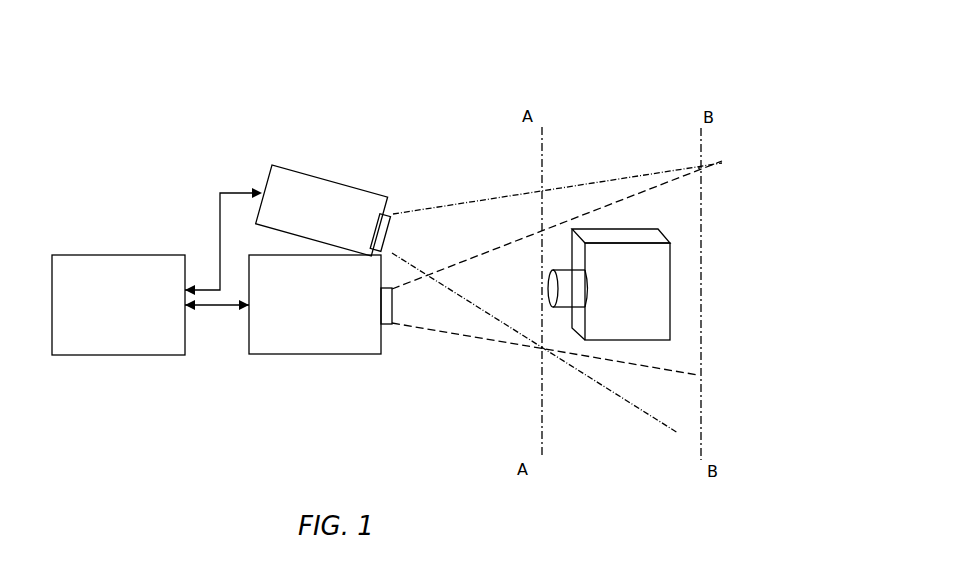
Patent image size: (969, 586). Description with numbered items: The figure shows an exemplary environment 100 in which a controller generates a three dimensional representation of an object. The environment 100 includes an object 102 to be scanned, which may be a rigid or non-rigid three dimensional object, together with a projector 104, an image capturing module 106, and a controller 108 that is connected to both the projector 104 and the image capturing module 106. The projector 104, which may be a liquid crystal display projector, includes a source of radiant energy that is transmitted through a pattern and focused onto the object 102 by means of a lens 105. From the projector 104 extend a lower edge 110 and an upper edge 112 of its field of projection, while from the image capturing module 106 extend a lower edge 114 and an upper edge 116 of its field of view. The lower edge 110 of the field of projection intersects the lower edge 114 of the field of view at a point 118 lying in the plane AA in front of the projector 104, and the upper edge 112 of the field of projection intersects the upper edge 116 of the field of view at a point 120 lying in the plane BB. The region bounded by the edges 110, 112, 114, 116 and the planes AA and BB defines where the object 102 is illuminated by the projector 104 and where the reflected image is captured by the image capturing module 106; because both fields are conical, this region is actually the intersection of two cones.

The environment 100 is at (531, 58).
The object 102 is at (609, 284).
The projector 104 is at (315, 304).
The lens 105 is at (388, 314).
The image capturing module 106 is at (326, 211).
The controller 108 is at (118, 305).
The lower edge of field of projection 110 is at (453, 333).
The upper edge of field of projection 112 is at (528, 235).
The lower edge of field of view 114 is at (628, 403).
The upper edge of field of view 116 is at (528, 195).
The point 118 is at (497, 370).
The point 120 is at (697, 166).